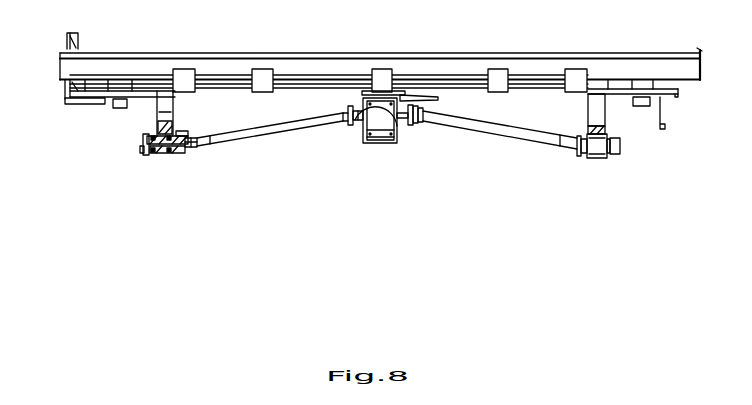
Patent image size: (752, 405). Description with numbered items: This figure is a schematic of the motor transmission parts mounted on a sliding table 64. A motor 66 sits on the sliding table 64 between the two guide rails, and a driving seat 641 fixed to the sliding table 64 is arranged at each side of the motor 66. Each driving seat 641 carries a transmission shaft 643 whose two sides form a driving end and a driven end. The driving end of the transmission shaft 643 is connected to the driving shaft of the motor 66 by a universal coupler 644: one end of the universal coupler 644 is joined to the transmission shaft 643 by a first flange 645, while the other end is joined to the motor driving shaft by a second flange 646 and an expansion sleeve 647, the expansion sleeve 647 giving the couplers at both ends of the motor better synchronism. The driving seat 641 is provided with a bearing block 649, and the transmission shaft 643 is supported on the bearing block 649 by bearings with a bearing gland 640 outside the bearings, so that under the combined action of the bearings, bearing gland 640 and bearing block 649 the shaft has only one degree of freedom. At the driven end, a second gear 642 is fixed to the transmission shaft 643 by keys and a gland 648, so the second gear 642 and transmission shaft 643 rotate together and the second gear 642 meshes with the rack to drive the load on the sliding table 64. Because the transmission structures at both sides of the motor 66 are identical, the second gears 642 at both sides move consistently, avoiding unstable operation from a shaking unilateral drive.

The sliding table 64 is at (355, 52).
The motor 66 is at (380, 143).
The bearing gland 640 is at (158, 153).
The driving seat 641 is at (173, 101).
The second gear 642 is at (143, 139).
The transmission shaft 643 is at (186, 147).
The universal coupler 644 is at (279, 130).
The first flange 645 is at (181, 136).
The second flange 646 is at (358, 110).
The expansion sleeve 647 is at (356, 130).
The gland 648 is at (141, 151).
The bearing block 649 is at (169, 154).